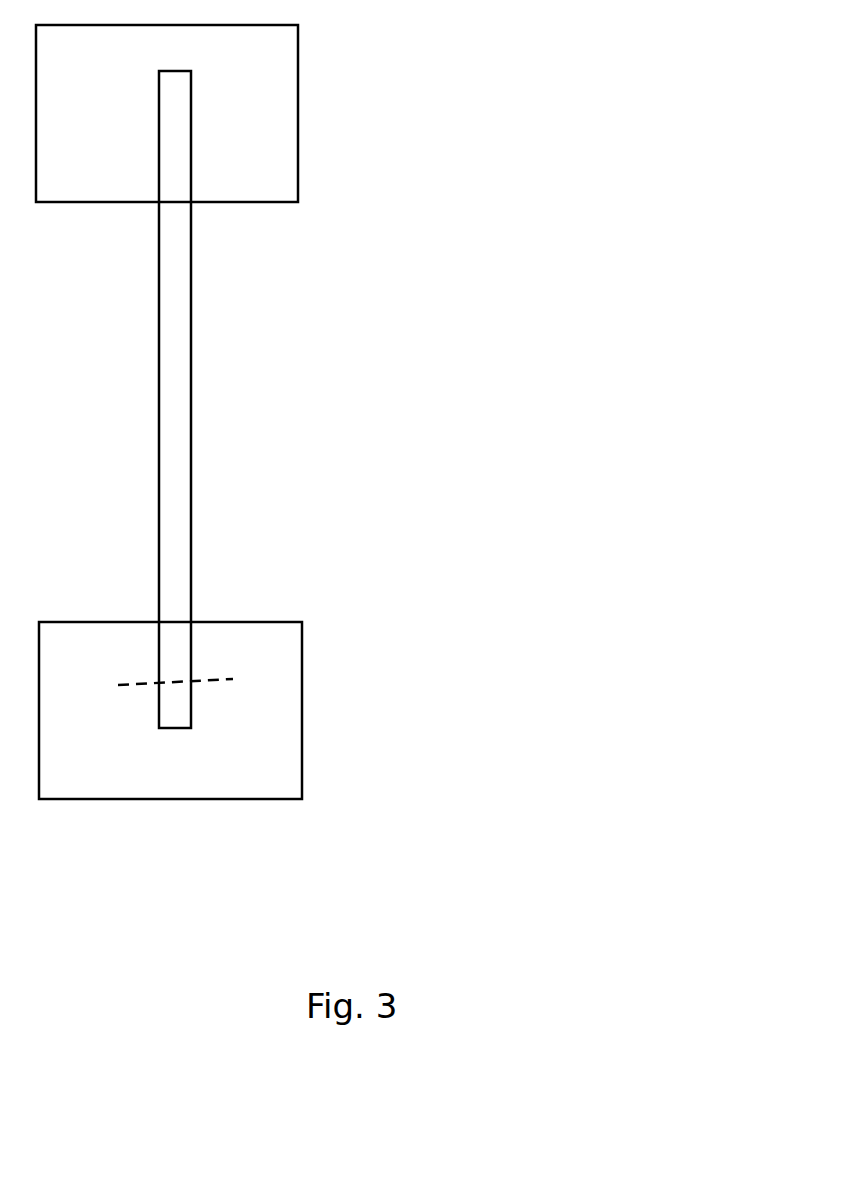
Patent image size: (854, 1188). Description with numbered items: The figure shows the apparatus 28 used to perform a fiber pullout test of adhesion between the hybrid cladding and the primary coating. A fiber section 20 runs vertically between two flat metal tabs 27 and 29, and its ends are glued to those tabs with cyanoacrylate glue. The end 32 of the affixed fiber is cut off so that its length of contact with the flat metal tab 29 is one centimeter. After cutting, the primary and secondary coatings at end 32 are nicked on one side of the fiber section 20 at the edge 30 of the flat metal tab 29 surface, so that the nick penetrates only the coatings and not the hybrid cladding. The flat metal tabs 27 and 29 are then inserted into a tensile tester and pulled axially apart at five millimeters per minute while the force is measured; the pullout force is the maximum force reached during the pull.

The fiber section 20 is at (172, 377).
The flat metal tab 27 is at (247, 122).
The apparatus 28 is at (555, 319).
The flat metal tab 29 is at (233, 726).
The edge of flat metal tab 30 is at (193, 619).
The end of fiber 32 is at (212, 676).